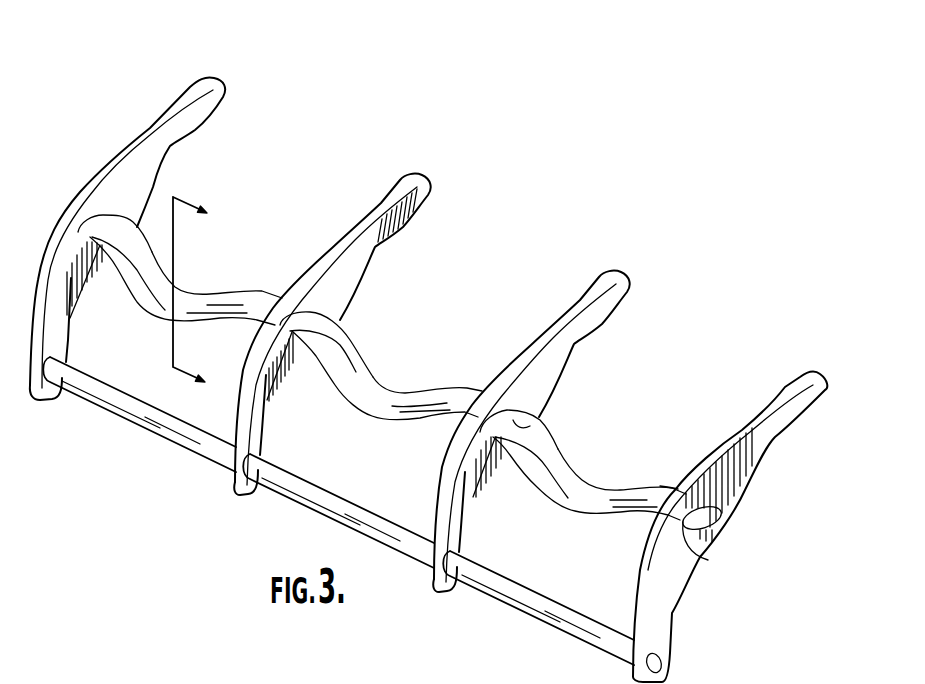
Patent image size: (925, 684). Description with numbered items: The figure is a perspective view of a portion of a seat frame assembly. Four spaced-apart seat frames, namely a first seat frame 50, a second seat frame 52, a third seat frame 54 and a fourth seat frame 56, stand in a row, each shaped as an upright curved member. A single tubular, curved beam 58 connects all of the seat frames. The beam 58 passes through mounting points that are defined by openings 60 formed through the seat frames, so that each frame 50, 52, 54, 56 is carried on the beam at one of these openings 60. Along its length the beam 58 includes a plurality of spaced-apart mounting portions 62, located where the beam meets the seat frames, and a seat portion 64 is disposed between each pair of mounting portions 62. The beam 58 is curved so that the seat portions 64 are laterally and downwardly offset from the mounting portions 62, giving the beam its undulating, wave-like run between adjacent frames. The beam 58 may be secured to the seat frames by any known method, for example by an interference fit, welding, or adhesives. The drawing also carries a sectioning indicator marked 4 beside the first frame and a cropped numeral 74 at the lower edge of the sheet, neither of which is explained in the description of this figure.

The first seat frame 50 is at (160, 113).
The second seat frame 52 is at (362, 217).
The third seat frame 54 is at (585, 292).
The fourth seat frame 56 is at (788, 387).
The tubular curved beam 58 is at (403, 350).
The opening 60 is at (100, 215).
The mounting portion 62 is at (513, 420).
The seat portion 64 is at (350, 413).
The section line 4- 4 is at (198, 299).
The base 74 is at (112, 680).